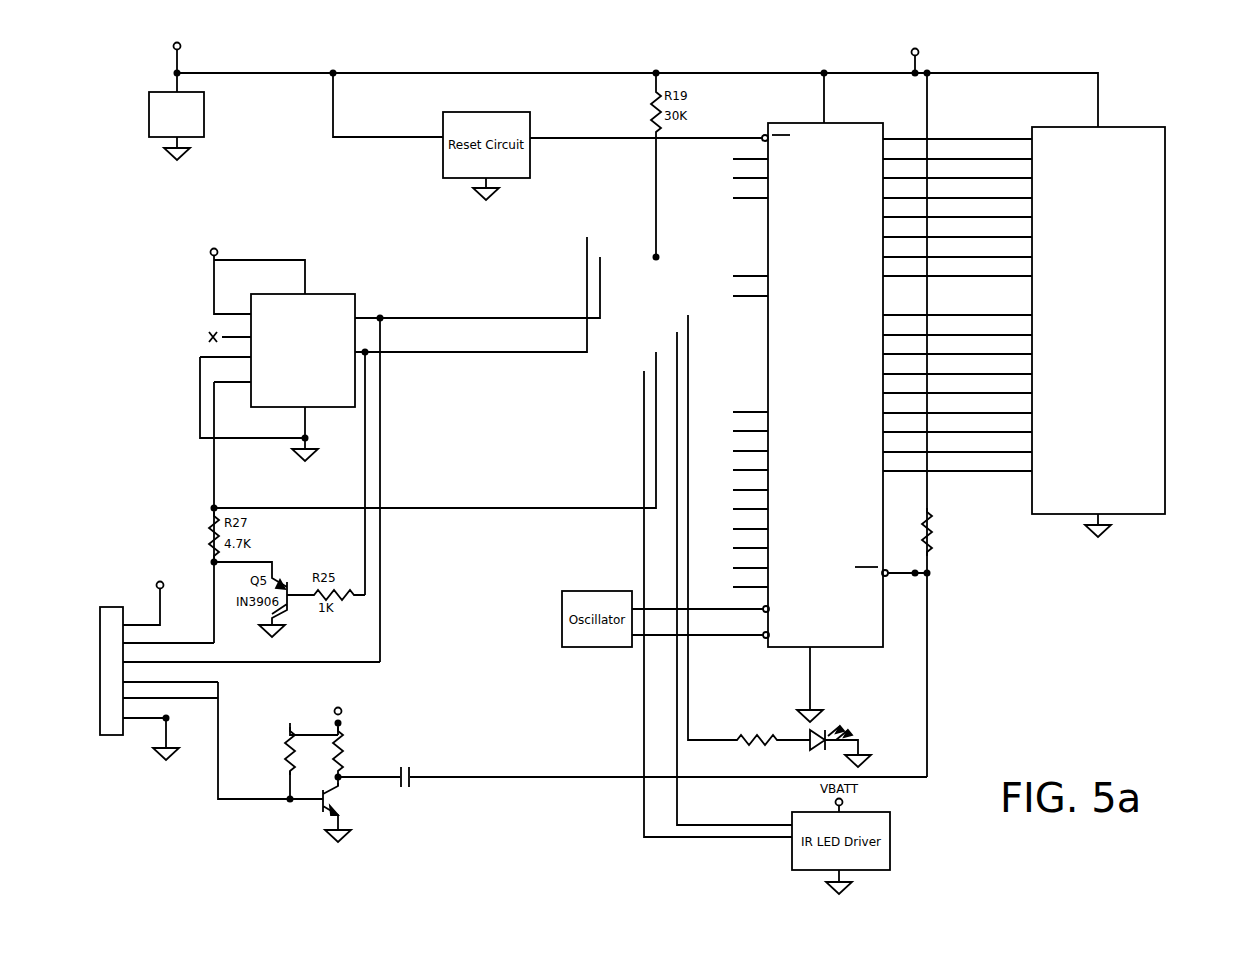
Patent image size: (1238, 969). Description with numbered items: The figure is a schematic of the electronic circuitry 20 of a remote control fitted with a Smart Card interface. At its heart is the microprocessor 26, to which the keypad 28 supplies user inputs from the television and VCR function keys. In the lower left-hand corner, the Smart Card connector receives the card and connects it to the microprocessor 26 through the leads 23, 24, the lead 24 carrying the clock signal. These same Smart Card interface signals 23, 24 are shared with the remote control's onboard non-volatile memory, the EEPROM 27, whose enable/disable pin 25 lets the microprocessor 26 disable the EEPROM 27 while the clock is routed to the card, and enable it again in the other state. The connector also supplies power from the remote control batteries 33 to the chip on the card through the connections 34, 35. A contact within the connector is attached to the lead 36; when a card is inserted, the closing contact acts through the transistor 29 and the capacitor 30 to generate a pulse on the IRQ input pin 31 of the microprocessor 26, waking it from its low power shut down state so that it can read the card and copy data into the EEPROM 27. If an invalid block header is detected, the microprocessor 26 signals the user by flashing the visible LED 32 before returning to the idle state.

The electronic circuitry 20 is at (969, 742).
The lead 23 is at (418, 318).
The lead 24 is at (420, 352).
The enable/disable pin 25 is at (214, 480).
The microprocessor 26 is at (854, 128).
The EEPROM 27 is at (335, 294).
The keypad 28 is at (1124, 130).
The transistor 29 is at (342, 772).
The capacitor 30 is at (420, 792).
The IRQ input pin 31 is at (860, 600).
The visible LED 32 is at (855, 728).
The batteries 33 is at (208, 112).
The connection 34 is at (185, 753).
The connection 35 is at (155, 600).
The lead 36 is at (245, 800).